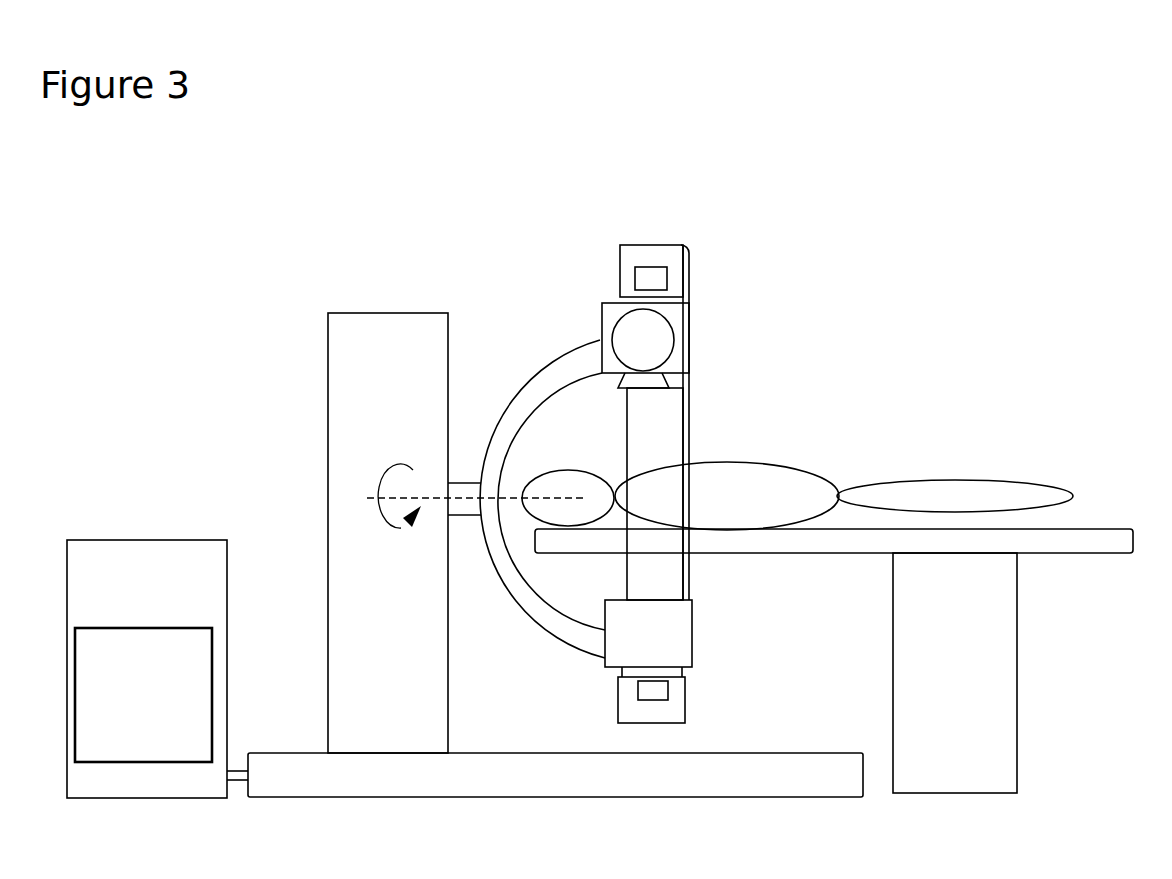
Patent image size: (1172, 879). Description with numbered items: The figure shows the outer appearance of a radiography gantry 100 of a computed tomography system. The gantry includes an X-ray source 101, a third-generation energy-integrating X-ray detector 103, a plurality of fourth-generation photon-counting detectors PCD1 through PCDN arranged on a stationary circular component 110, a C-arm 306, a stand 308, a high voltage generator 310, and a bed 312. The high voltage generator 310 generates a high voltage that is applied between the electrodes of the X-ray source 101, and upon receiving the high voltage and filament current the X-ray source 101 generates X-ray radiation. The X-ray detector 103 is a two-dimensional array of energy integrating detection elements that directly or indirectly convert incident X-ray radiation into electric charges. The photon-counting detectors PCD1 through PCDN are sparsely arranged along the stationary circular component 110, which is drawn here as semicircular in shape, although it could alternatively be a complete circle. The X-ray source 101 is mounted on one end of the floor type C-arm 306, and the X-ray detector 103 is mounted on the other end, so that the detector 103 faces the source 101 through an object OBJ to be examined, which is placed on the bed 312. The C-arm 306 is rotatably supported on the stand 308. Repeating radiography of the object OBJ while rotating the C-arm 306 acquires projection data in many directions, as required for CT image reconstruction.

The radiography gantry 100 is at (688, 210).
The X-ray source 101 is at (601, 318).
The third-generation energy-integrating X-ray detector 103 is at (693, 622).
The stationary circular component 110 is at (690, 282).
The C-arm 306 is at (525, 610).
The stand 308 is at (398, 312).
The high voltage generator 310 is at (181, 627).
The bed 312 is at (1106, 528).
The photon-counting detector PCD1 is at (633, 278).
The photon-counting detector PCDN is at (668, 696).
The object OBJ is at (789, 467).